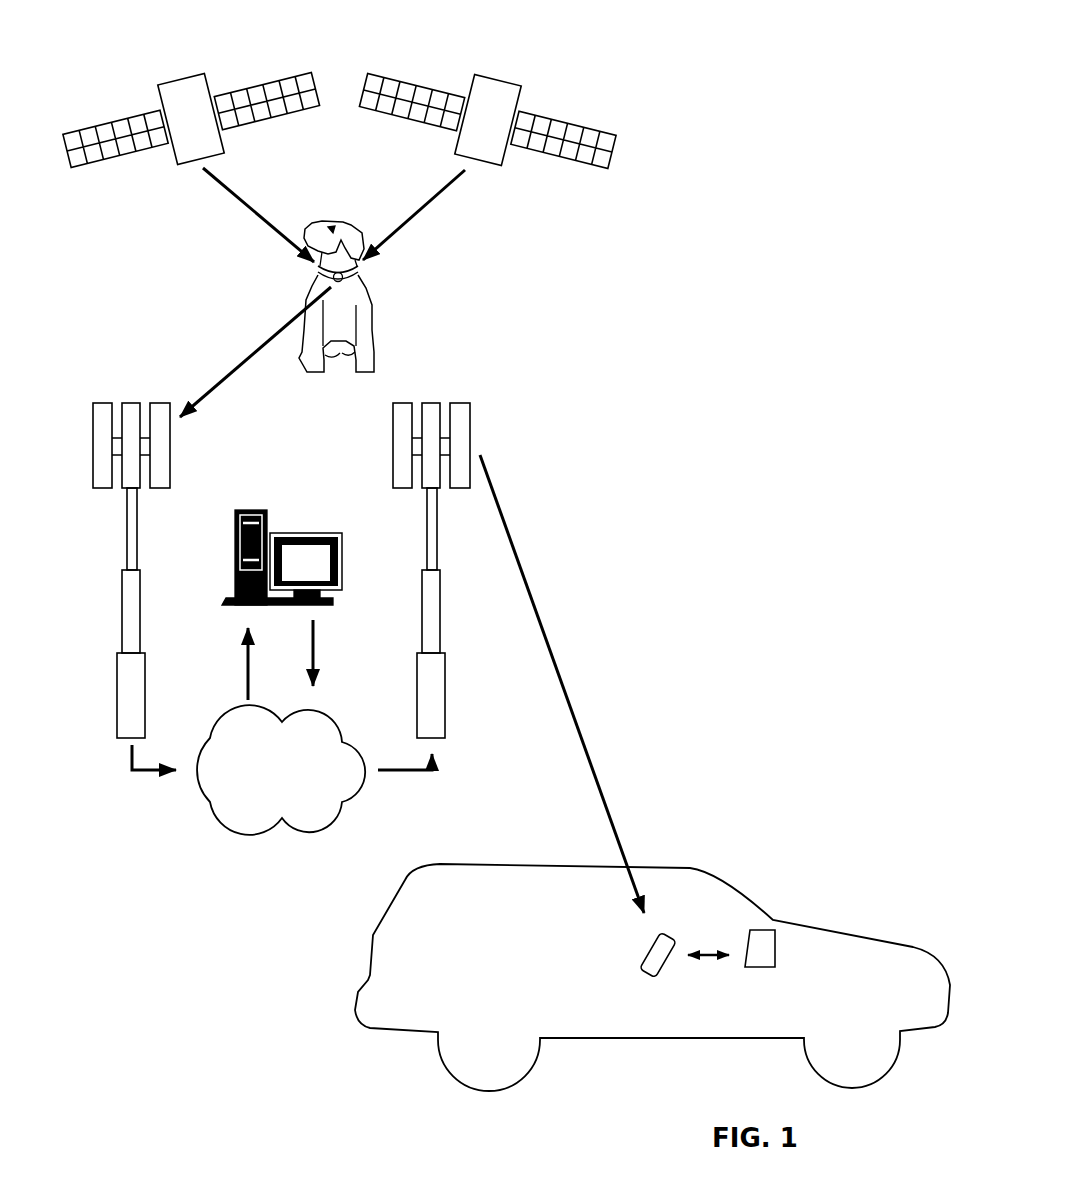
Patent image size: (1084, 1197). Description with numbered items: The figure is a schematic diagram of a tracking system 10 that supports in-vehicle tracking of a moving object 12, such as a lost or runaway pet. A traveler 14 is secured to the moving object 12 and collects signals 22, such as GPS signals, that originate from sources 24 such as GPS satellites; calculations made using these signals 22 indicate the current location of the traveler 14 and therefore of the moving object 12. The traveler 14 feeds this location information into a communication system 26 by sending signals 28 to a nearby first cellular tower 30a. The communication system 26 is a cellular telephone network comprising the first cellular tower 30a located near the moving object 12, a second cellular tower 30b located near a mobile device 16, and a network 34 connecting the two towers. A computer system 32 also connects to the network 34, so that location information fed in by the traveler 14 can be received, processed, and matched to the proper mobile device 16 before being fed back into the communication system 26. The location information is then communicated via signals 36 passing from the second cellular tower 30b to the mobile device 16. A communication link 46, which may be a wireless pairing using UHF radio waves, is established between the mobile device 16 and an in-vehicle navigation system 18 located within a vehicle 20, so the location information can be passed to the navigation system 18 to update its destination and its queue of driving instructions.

The system 10 is at (703, 43).
The moving object 12 is at (378, 296).
The traveler 14 is at (358, 292).
The mobile device 16 is at (645, 965).
The in-vehicle navigation system 18 is at (770, 944).
The vehicle 20 is at (713, 869).
The signals 22 is at (246, 203).
The sources 24 is at (225, 68).
The communication system 26 is at (284, 543).
The signals 28 is at (249, 354).
The first cellular tower 30a is at (123, 385).
The second cellular tower 30b is at (468, 383).
The computer system 32 is at (305, 511).
The network 34 is at (281, 770).
The signals 36 is at (533, 587).
The communication link 46 is at (710, 960).